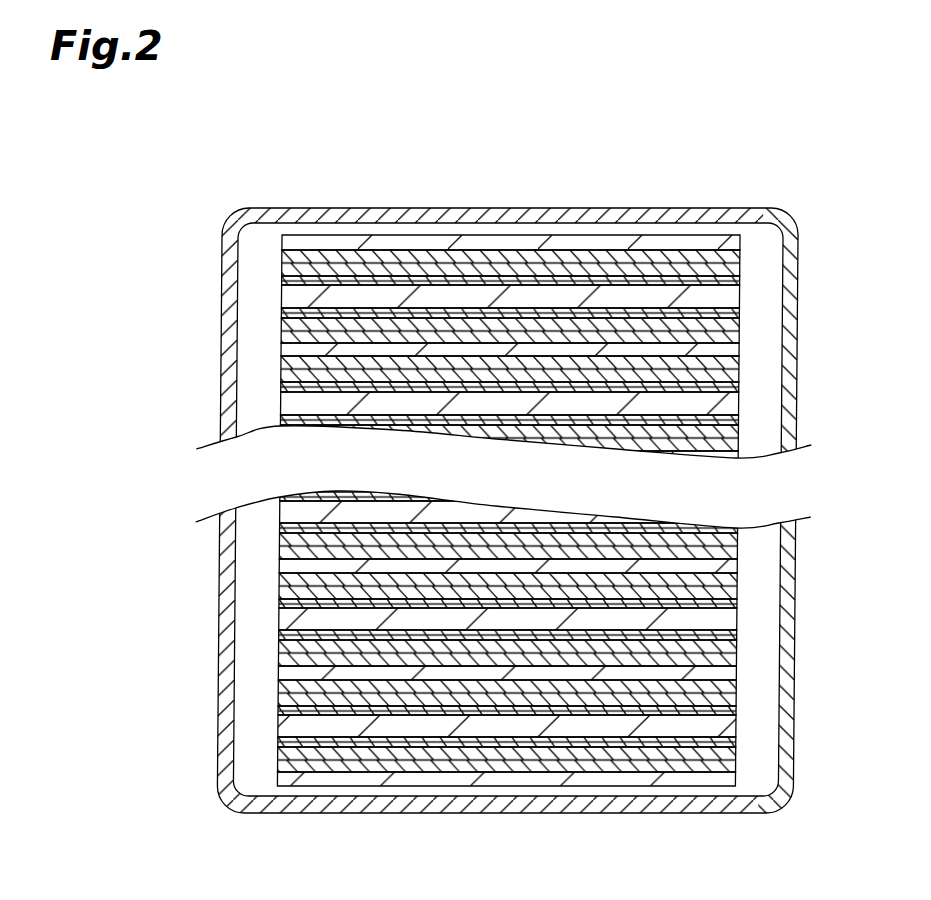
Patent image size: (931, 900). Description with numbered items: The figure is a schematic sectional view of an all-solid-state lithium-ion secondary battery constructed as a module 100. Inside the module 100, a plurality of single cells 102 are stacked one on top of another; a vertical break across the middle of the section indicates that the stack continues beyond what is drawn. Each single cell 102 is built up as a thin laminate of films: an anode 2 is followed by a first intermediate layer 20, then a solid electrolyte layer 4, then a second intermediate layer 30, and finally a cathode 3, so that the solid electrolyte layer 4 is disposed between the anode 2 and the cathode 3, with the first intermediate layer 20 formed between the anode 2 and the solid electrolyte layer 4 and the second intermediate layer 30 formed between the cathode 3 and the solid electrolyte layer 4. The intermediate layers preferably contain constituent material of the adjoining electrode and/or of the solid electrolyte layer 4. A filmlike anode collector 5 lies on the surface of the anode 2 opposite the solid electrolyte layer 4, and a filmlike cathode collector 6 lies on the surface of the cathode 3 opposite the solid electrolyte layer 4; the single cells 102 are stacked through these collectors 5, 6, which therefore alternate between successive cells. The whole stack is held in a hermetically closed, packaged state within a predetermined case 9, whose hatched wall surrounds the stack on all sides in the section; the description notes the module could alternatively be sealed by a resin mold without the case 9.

The module 100 is at (696, 119).
The single cell 102 is at (145, 235).
The anode collector 5 is at (284, 243).
The anode 2 is at (284, 265).
The first intermediate layer 20 is at (284, 282).
The solid electrolyte layer 4 is at (284, 296).
The second intermediate layer 30 is at (284, 314).
The cathode 3 is at (284, 324).
The cathode collector 6 is at (284, 350).
The case 9 is at (699, 803).